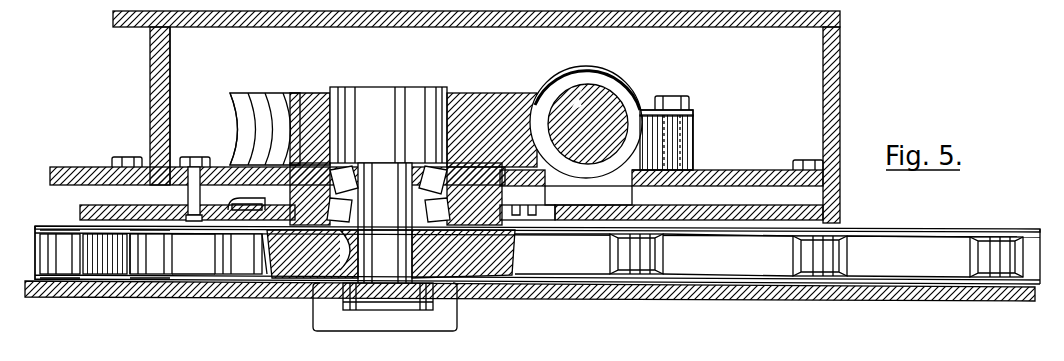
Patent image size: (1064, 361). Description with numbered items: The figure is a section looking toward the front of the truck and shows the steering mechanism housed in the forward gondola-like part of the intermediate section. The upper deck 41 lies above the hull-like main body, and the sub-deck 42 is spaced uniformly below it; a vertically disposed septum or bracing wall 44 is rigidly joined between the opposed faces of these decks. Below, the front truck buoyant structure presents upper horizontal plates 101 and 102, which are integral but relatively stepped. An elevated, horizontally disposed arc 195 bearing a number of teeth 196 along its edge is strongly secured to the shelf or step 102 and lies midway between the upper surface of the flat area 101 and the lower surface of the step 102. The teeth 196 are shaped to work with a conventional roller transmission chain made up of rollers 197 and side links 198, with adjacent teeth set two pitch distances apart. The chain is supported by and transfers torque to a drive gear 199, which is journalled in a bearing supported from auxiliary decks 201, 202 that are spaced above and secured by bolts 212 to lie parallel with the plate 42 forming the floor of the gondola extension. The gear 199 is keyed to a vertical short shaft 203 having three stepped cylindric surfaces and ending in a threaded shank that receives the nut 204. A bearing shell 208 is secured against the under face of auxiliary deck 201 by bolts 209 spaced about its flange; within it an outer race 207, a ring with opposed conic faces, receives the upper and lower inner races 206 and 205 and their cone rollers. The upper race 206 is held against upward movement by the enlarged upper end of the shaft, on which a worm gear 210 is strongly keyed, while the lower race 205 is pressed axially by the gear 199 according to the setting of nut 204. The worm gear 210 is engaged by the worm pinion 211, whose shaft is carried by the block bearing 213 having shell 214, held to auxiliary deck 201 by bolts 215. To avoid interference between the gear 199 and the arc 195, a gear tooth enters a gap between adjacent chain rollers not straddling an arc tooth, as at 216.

The upper deck 41 is at (766, 27).
The sub-deck 42 is at (100, 207).
The bracing wall 44 is at (170, 66).
The upper horizontal plate 101 is at (932, 232).
The step 102 is at (597, 299).
The arc 195 is at (712, 270).
The teeth 196 is at (100, 244).
The rollers 197 is at (48, 252).
The side links 198 is at (48, 228).
The drive gear 199 is at (513, 255).
The auxiliary deck 201 is at (786, 173).
The auxiliary deck 202 is at (85, 172).
The vertical short shaft 203 is at (392, 88).
The nut 204 is at (347, 300).
The lower inner race 205 is at (360, 218).
The upper inner race 206 is at (388, 233).
The outer race 207 is at (480, 166).
The bearing shell 208 is at (548, 192).
The bolts 209 is at (238, 202).
The worm gear 210 is at (284, 93).
The worm pinion 211 is at (560, 92).
The bolts 212 is at (124, 157).
The block bearing 213 is at (686, 150).
The shell 214 is at (693, 112).
The bolts 215 is at (682, 97).
The gap 216 is at (192, 270).